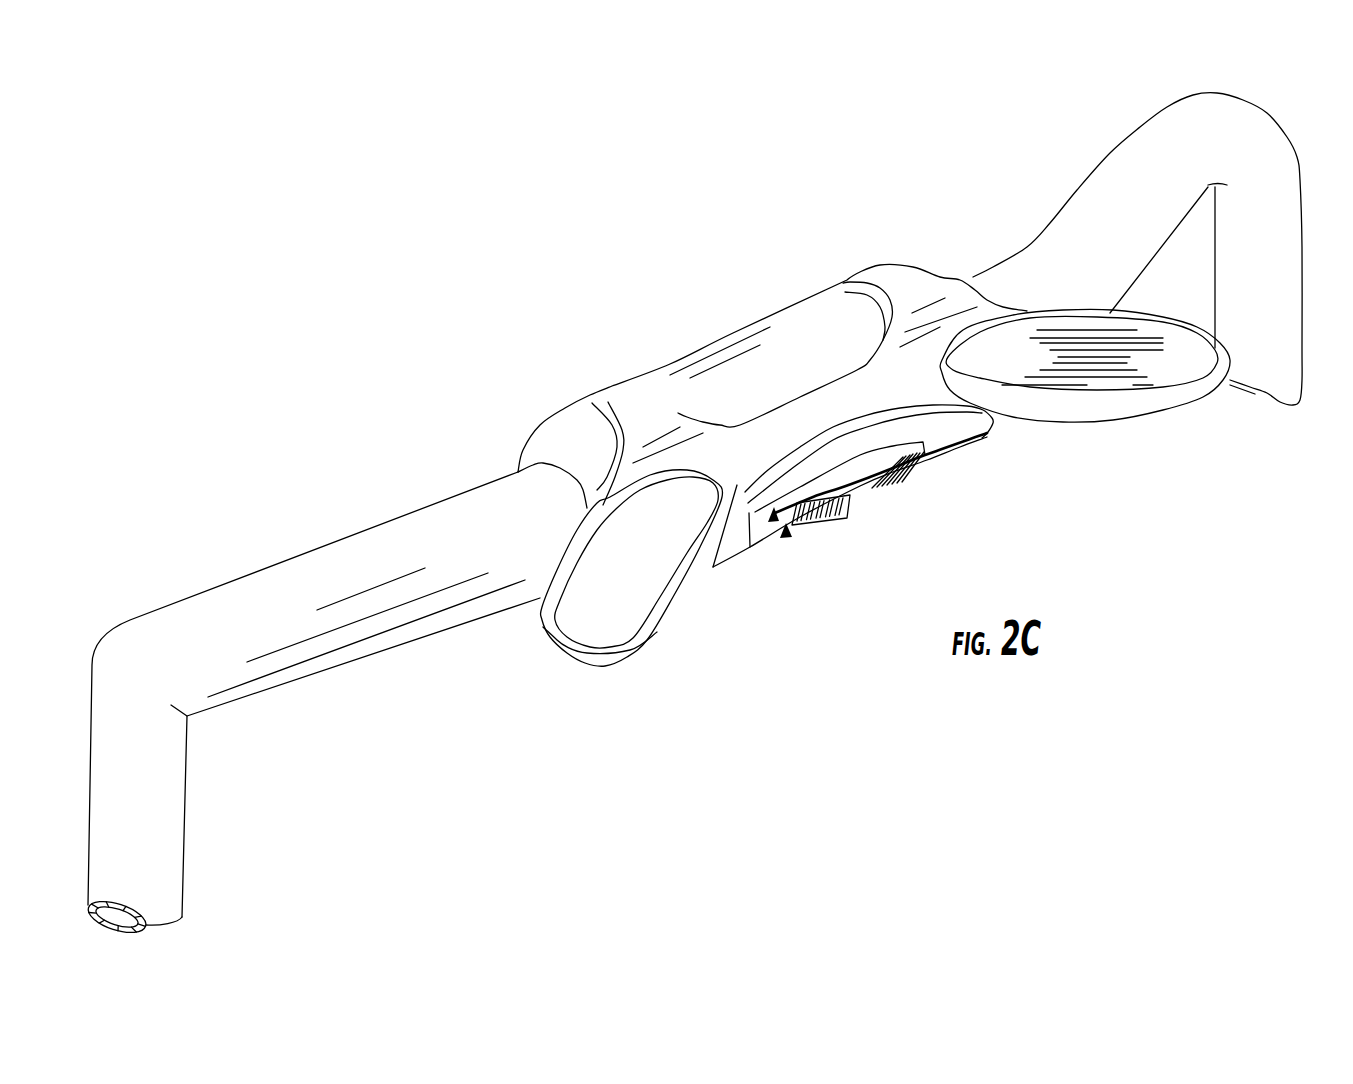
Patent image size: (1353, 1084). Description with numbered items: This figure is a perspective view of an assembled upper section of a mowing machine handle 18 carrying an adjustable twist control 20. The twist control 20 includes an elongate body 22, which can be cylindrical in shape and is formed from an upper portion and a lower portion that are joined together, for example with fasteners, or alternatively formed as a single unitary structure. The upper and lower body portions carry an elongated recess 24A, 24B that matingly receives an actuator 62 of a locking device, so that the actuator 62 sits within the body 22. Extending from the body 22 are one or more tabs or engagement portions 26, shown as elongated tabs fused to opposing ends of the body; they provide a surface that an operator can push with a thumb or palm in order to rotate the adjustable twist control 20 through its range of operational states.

The handlebar tube 18 is at (388, 523).
The adjustable twist control 20 is at (641, 312).
The elongate body 22 is at (620, 395).
The engagement portions 26 is at (597, 613).
The actuator 62 is at (870, 502).
The elongated recess 24A is at (771, 522).
The elongated recess 24B is at (787, 537).